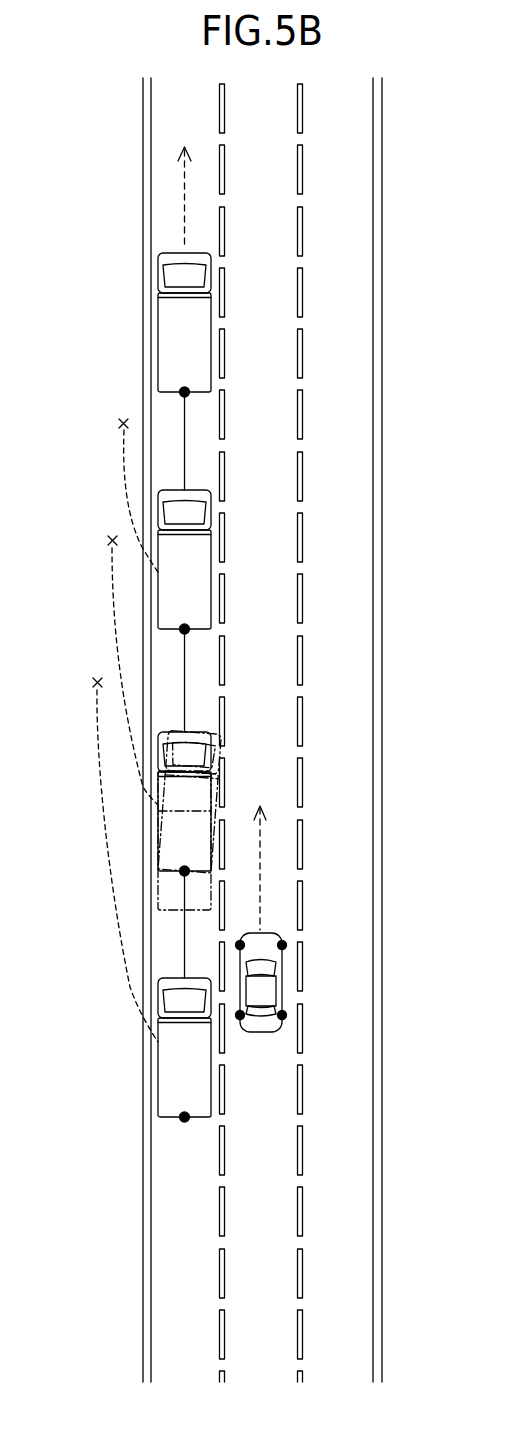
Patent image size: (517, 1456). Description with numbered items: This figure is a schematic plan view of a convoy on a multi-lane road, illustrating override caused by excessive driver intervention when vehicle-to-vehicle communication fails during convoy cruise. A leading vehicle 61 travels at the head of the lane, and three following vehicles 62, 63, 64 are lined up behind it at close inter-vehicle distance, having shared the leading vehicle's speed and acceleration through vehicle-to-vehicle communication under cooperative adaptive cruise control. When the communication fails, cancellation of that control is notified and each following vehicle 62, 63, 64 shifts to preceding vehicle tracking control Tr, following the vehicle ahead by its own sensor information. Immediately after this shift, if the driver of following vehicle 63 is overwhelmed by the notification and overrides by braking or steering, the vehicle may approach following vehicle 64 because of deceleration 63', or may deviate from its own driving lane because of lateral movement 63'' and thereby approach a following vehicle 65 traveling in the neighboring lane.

The leading vehicle 61 is at (212, 343).
The following vehicle 62 is at (212, 590).
The following vehicle 63 is at (224, 804).
The deceleration of the vehicle 63' is at (116, 862).
The lateral movement of the vehicle 63'' is at (267, 769).
The following vehicle 64 is at (212, 1085).
The following vehicle in a neighboring lane 65 is at (287, 985).
The preceding vehicle tracking control Tr is at (184, 448).